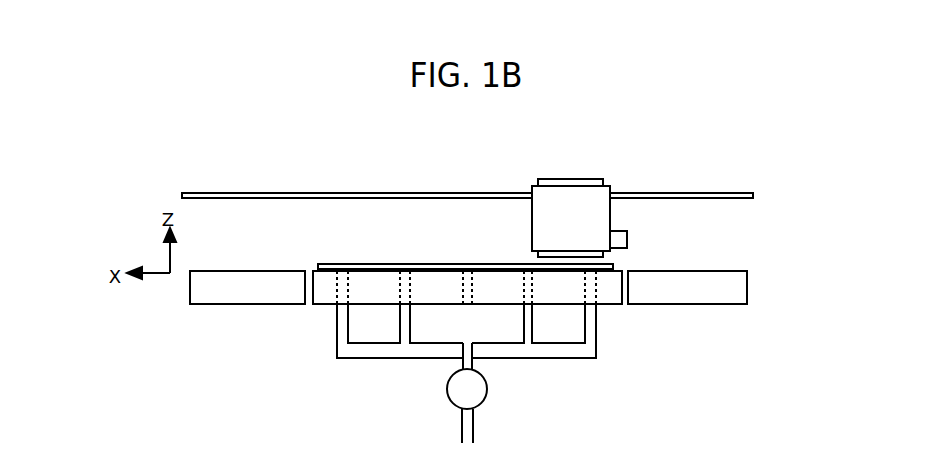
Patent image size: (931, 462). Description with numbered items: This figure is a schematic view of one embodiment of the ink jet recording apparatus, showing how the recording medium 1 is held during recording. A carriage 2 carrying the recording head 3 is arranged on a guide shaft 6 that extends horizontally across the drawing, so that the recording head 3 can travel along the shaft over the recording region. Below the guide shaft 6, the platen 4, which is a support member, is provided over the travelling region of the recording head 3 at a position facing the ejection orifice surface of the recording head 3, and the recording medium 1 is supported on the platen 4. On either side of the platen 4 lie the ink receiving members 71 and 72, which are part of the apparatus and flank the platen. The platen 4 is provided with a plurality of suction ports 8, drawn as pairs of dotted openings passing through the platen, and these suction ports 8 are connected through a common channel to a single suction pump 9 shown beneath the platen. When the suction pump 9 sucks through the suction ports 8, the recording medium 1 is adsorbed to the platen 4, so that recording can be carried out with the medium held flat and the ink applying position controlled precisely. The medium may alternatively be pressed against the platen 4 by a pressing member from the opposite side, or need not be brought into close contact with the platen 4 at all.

The recording medium 1 is at (455, 268).
The carriage 2 is at (565, 198).
The recording head 3 is at (548, 179).
The platen 4 is at (605, 293).
The guide shaft 6 is at (220, 193).
The suction ports 8 is at (465, 297).
The suction pump 9 is at (481, 402).
The ink receiving member 71 is at (702, 290).
The ink receiving member 72 is at (245, 290).